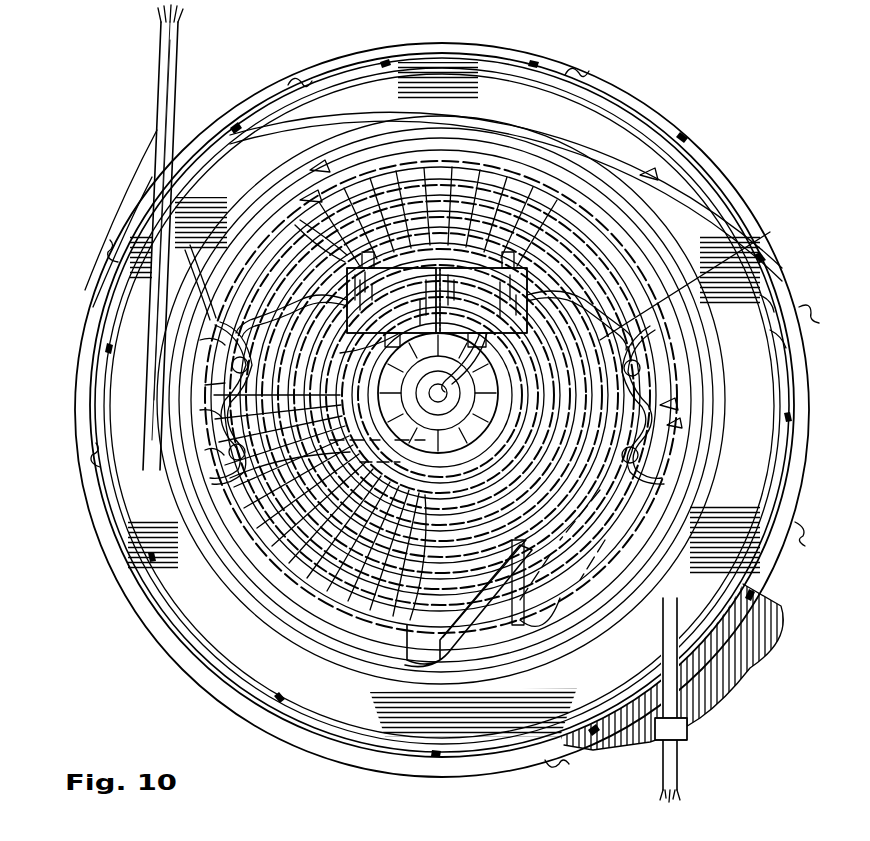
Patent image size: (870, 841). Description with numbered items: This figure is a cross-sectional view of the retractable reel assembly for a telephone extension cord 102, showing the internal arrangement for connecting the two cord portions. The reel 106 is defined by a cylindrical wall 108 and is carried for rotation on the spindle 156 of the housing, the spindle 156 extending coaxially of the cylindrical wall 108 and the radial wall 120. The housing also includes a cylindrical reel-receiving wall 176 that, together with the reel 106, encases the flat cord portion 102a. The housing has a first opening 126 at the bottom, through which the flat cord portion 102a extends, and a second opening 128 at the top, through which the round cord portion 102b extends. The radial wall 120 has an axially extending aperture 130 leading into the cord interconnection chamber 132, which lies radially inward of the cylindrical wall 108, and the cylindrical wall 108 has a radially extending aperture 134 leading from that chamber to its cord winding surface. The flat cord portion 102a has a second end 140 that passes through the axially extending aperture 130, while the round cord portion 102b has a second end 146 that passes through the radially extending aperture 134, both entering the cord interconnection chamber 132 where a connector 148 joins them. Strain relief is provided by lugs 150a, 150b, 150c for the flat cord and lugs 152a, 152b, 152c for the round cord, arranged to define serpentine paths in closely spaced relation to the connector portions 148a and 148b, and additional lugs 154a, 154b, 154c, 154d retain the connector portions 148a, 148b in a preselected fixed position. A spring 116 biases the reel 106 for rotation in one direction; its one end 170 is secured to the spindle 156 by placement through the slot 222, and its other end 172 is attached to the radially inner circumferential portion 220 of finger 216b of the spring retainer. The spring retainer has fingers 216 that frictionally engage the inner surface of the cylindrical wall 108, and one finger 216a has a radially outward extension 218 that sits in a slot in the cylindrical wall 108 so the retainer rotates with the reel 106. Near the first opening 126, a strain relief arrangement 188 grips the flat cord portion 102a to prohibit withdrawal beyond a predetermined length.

The telephone extension cord 102 is at (150, 48).
The flat cord portion 102a is at (690, 720).
The round cord portion 102b is at (160, 97).
The reel 106 is at (713, 247).
The cylindrical wall 108 is at (428, 160).
The spring 116 is at (469, 258).
The radial wall 120 is at (660, 200).
The first opening 126 is at (693, 660).
The second opening 128 is at (237, 118).
The axially extending aperture 130 is at (437, 440).
The cord interconnection chamber 132 is at (705, 278).
The radially extending aperture 134 is at (405, 645).
The second end 140 is at (262, 472).
The second end 146 is at (700, 520).
The connector 148 is at (475, 243).
The connector portion 148a is at (383, 247).
The connector portion 148b is at (503, 205).
The lug 150a is at (250, 478).
The lug 150b is at (256, 447).
The lug 150c is at (258, 388).
The lug 152a is at (690, 447).
The lug 152b is at (782, 336).
The lug 152c is at (770, 300).
The lug 154a is at (305, 225).
The lug 154b is at (345, 345).
The lug 154c is at (530, 342).
The lug 154d is at (624, 368).
The spindle 156 is at (395, 405).
The spring end 170 is at (340, 356).
The spring end 172 is at (600, 185).
The cylindrical reel-receiving wall 176 is at (590, 105).
The strain relief arrangement 188 is at (655, 742).
The fingers 216 is at (320, 220).
The finger 216a is at (258, 413).
The finger 216b is at (657, 183).
The radially outward extension 218 is at (262, 342).
The slot 220 is at (105, 318).
The slot 222 is at (463, 350).